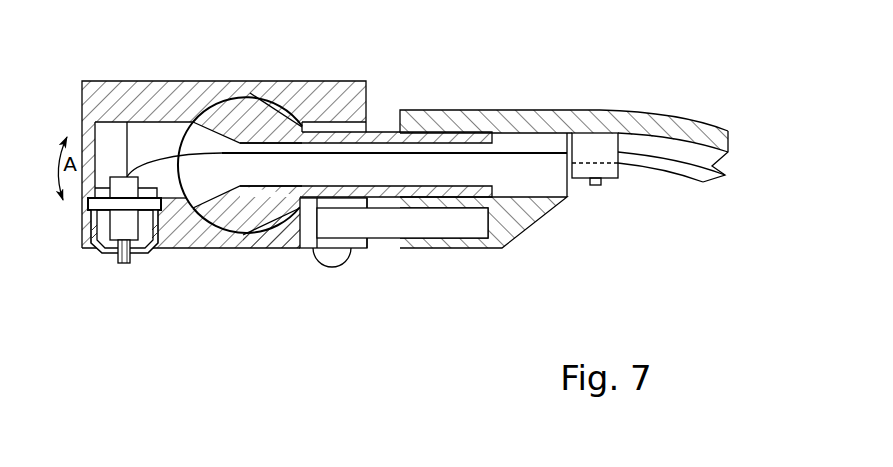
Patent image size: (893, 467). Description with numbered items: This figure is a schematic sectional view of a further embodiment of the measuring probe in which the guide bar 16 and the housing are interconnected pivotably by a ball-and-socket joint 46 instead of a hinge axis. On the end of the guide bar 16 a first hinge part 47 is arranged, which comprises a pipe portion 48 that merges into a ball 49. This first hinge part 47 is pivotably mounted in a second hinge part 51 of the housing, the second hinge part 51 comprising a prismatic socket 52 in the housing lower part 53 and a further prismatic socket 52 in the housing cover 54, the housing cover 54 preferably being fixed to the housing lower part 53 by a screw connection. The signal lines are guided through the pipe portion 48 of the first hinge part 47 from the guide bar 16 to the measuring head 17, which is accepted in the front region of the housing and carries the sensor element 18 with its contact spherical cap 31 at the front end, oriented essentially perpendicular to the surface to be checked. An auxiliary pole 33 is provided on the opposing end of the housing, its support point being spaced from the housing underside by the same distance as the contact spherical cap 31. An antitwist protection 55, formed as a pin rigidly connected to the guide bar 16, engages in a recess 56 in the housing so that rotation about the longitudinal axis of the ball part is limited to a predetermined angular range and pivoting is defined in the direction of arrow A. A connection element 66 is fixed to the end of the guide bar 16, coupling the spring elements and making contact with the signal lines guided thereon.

The guide bar 16 is at (681, 124).
The measuring head 17 is at (103, 268).
The sensor element 18 is at (138, 266).
The contact spherical cap 31 is at (127, 266).
The auxiliary pole 33 is at (340, 258).
The ball-and-socket joint 46 is at (290, 95).
The first hinge part 47 is at (385, 124).
The pipe portion 48 is at (453, 118).
The ball 49 is at (232, 100).
The second hinge part 51 is at (282, 232).
The prismatic socket 52 is at (250, 93).
The housing lower part 53 is at (192, 237).
The housing cover 54 is at (164, 96).
The antitwist protection 55 is at (468, 228).
The recess 56 is at (308, 222).
The connection element 66 is at (610, 176).